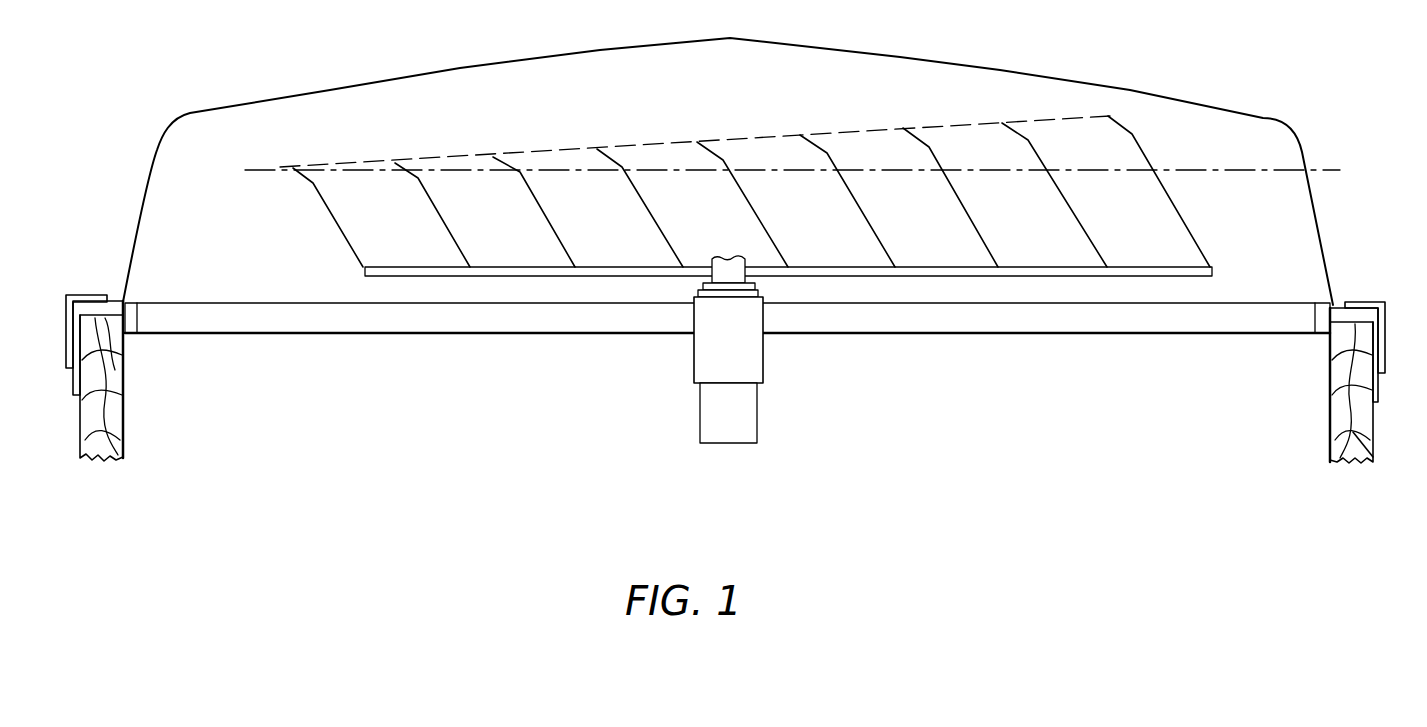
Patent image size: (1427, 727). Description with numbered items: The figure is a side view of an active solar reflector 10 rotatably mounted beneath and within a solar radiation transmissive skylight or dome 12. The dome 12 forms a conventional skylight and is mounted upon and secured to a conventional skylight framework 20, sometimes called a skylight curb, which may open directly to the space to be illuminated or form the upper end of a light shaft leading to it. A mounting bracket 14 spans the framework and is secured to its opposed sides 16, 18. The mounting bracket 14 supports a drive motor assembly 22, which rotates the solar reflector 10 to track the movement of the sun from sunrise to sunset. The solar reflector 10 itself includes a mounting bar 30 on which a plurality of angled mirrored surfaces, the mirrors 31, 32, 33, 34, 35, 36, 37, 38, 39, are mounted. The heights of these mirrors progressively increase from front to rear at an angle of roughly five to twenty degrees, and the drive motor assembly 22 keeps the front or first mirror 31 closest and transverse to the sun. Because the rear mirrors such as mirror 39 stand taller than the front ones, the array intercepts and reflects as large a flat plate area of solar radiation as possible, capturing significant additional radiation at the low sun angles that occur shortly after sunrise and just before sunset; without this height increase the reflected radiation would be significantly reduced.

The solar reflector 10 is at (1032, 260).
The dome 12 is at (1128, 90).
The mounting bracket 14 is at (323, 318).
The side 16 is at (125, 417).
The side 18 is at (1337, 423).
The framework 20 is at (1373, 457).
The drive motor assembly 22 is at (686, 372).
The mounting bar 30 is at (945, 274).
The mirror 31 is at (360, 242).
The mirror 32 is at (467, 242).
The mirror 33 is at (572, 242).
The mirror 34 is at (680, 242).
The mirror 35 is at (785, 242).
The mirror 36 is at (892, 242).
The mirror 37 is at (995, 242).
The mirror 38 is at (1104, 242).
The mirror 39 is at (1207, 242).